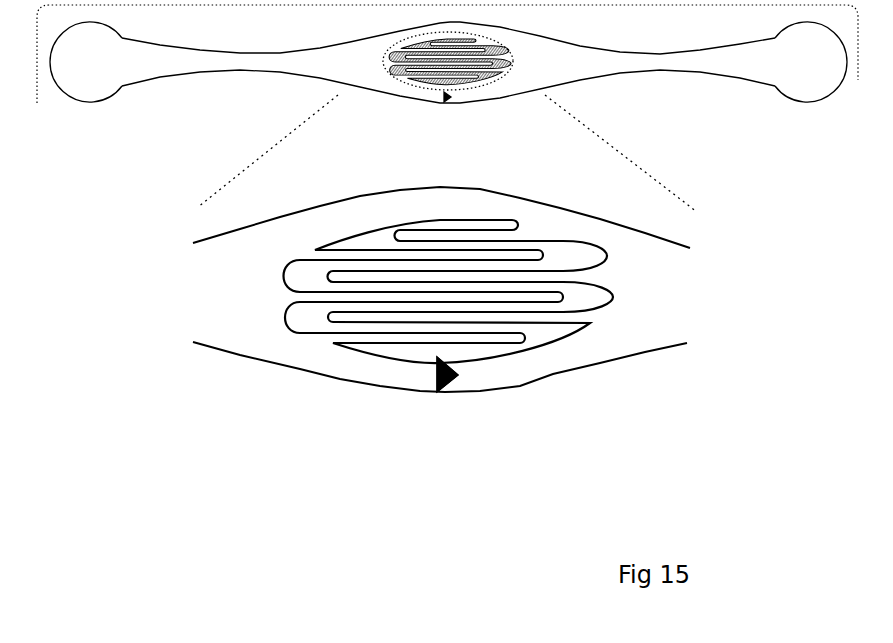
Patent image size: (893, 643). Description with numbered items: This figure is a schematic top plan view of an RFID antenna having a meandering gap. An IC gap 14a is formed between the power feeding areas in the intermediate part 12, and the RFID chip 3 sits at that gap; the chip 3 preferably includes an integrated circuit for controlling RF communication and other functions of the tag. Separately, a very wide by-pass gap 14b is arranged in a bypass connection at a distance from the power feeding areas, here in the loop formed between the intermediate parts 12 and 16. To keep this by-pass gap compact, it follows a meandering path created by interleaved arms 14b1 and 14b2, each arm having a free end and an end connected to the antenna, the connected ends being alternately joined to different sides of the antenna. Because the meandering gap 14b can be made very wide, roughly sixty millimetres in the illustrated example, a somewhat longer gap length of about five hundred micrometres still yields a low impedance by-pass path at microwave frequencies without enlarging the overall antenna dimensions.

The RFID chip 3 is at (438, 398).
The intermediate part 12 is at (338, 368).
The IC gap 14a is at (446, 398).
The by-pass gap 14b is at (459, 295).
The interleaved arm 14b1 is at (438, 233).
The interleaved arm 14b2 is at (362, 253).
The intermediate part 16 is at (510, 206).